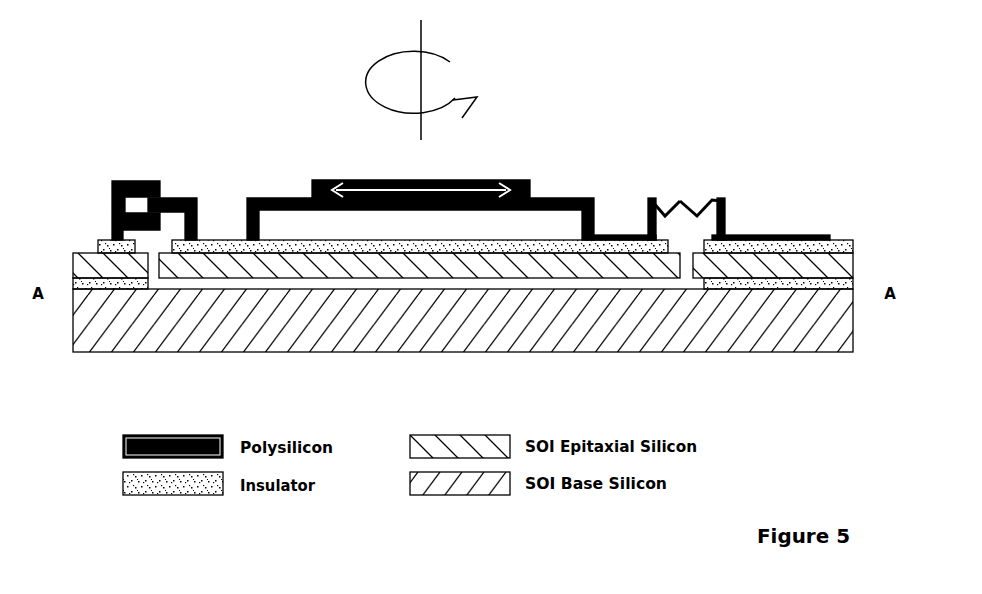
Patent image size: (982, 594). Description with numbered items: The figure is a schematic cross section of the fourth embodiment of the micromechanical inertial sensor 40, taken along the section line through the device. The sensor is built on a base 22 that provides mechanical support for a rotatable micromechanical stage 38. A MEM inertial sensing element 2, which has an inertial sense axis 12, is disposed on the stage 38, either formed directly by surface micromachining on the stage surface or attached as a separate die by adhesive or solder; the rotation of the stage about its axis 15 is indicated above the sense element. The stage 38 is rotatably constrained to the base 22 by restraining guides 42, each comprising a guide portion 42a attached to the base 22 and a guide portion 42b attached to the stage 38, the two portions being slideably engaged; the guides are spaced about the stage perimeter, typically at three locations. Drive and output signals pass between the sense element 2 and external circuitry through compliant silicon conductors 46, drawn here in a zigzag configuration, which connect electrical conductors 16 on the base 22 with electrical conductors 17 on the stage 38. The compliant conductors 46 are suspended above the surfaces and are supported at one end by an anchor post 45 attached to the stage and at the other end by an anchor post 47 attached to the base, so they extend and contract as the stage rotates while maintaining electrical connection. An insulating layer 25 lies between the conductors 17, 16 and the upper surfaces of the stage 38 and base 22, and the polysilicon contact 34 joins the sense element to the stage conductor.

The MEM inertial sensing element 2 is at (420, 182).
The inertial sense axis 12 is at (375, 185).
The axis of rotation 15 is at (410, 29).
The electrical conductors 16 is at (780, 235).
The electrical conductors 17 is at (633, 238).
The base 22 is at (463, 320).
The insulating layer 25 is at (212, 247).
The polysilicon contact pad 34 is at (598, 235).
The rotatable micromechanical stage 38 is at (330, 262).
The micromechanical inertial sensor 40 is at (573, 50).
The restraining guides 42 is at (140, 148).
The guide portion 42a is at (122, 190).
The guide portion 42b is at (185, 205).
The anchor post 45 is at (652, 202).
The compliant silicon conductors 46 is at (680, 207).
The anchor post 47 is at (722, 201).